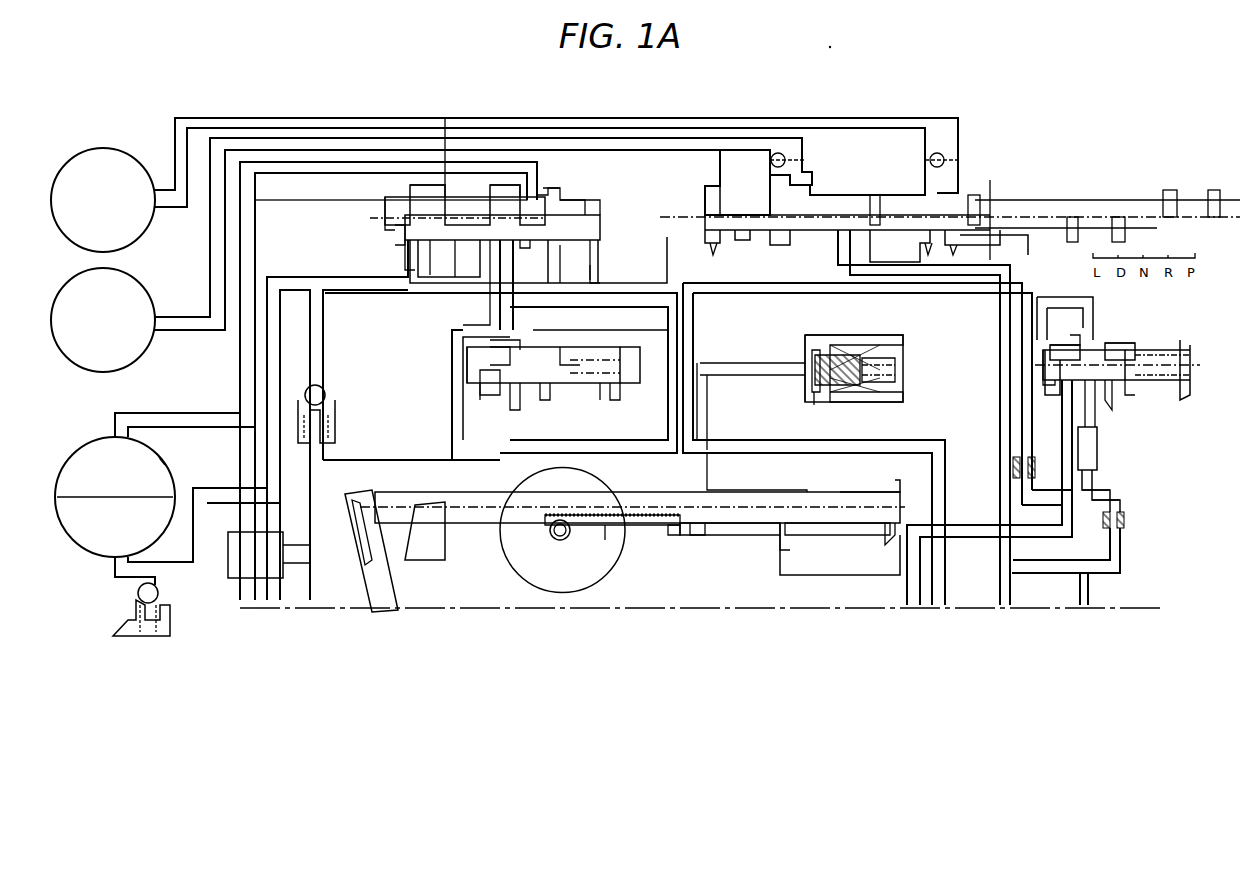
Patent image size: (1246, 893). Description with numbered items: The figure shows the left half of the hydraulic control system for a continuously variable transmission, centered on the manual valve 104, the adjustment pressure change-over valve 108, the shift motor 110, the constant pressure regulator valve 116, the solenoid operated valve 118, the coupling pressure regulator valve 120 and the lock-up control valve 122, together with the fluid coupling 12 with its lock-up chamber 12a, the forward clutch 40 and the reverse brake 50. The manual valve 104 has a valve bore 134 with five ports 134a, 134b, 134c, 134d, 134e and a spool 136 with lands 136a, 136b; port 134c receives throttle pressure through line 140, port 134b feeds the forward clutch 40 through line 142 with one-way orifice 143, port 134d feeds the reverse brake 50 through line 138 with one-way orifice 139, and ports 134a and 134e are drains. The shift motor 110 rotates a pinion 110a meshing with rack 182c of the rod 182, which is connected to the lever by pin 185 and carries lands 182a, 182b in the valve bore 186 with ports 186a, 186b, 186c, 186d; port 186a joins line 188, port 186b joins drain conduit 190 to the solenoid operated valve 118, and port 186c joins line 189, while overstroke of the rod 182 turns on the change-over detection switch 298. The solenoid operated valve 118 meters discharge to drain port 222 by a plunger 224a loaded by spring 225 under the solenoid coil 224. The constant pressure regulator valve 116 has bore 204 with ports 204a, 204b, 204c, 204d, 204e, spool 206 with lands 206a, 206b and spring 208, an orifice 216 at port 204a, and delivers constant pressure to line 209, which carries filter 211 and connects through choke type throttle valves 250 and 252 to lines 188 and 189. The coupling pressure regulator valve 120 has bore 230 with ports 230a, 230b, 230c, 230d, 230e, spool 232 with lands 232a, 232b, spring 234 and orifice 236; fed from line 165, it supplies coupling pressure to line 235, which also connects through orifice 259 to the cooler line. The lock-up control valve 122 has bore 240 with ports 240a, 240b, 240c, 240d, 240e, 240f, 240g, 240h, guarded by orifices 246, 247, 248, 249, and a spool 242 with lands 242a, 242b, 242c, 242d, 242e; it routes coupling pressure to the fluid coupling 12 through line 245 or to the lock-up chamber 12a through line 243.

The fluid coupling 12 is at (88, 550).
The lock-up chamber 12a is at (165, 465).
The forward clutch 40 is at (152, 286).
The reverse brake 50 is at (142, 163).
The manual valve 104 is at (985, 160).
The adjustment pressure change-over valve 108 is at (740, 528).
The shift motor 110 is at (505, 565).
The pinion 110a is at (565, 535).
The constant pressure regulator valve 116 is at (1140, 385).
The solenoid operated valve 118 is at (798, 352).
The coupling pressure regulator valve 120 is at (603, 400).
The lock-up control valve 122 is at (340, 212).
The valve bore 134 is at (1020, 193).
The port 134a is at (708, 250).
The port 134b is at (800, 240).
The port 134c is at (840, 262).
The port 134d is at (918, 243).
The port 134e is at (950, 250).
The spool 136 is at (1110, 200).
The land 136a is at (855, 203).
The land 136b is at (972, 200).
The hydraulic fluid line 138 is at (890, 128).
The one-way orifice 139 is at (942, 153).
The hydraulic fluid line 140 is at (1000, 414).
The hydraulic fluid line 142 is at (660, 138).
The one-way orifice 143 is at (785, 160).
The hydraulic fluid line 165 is at (788, 455).
The rod 182 is at (468, 520).
The land 182a is at (660, 527).
The land 182b is at (822, 518).
The rack 182c is at (630, 530).
The pin 185 is at (360, 515).
The valve bore 186 is at (842, 492).
The port 186a is at (680, 535).
The port 186b is at (705, 535).
The port 186c is at (798, 530).
The port 186d is at (888, 528).
The hydraulic fluid line 188 is at (683, 343).
The hydraulic fluid line 189 is at (808, 575).
The drain conduit 190 is at (707, 412).
The valve bore 204 is at (1165, 345).
The port 204a is at (1043, 380).
The port 204b is at (1065, 415).
The port 204c is at (1088, 385).
The port 204d is at (1112, 400).
The port 204e is at (1185, 388).
The spool 206 is at (1175, 352).
The land 206a is at (1060, 345).
The land 206b is at (1115, 352).
The spring 208 is at (1175, 370).
The hydraulic fluid line 209 is at (972, 310).
The filter 211 is at (1095, 455).
The orifice 216 is at (1045, 352).
The drain port 222 is at (816, 392).
The solenoid coil 224 is at (875, 338).
The plunger 224a is at (830, 360).
The spring 225 is at (895, 365).
The valve bore 230 is at (600, 350).
The port 230a is at (475, 380).
The port 230b is at (500, 395).
The port 230c is at (525, 400).
The port 230d is at (550, 388).
The port 230e is at (612, 386).
The spool 232 is at (480, 385).
The land 232a is at (495, 360).
The land 232b is at (560, 358).
The spring 234 is at (602, 366).
The hydraulic fluid line 235 is at (515, 262).
The orifice 236 is at (490, 348).
The valve bore 240 is at (580, 192).
The port 240a is at (398, 240).
The port 240b is at (405, 258).
The port 240c is at (430, 258).
The port 240d is at (465, 262).
The port 240e is at (490, 270).
The port 240f is at (540, 240).
The port 240g is at (565, 262).
The port 240h is at (600, 252).
The spool 242 is at (385, 228).
The land 242a is at (390, 210).
The land 242b is at (450, 205).
The land 242c is at (525, 212).
The land 242d is at (538, 190).
The land 242e is at (590, 208).
The hydraulic fluid line 243 is at (260, 208).
The hydraulic fluid line 245 is at (290, 347).
The orifice 246 is at (415, 268).
The orifice 247 is at (447, 165).
The orifice 248 is at (560, 265).
The orifice 249 is at (598, 270).
The choke type throttle valve 250 is at (160, 595).
The choke type throttle valve 252 is at (328, 392).
The orifice 259 is at (410, 462).
The change-over detection switch 298 is at (252, 532).